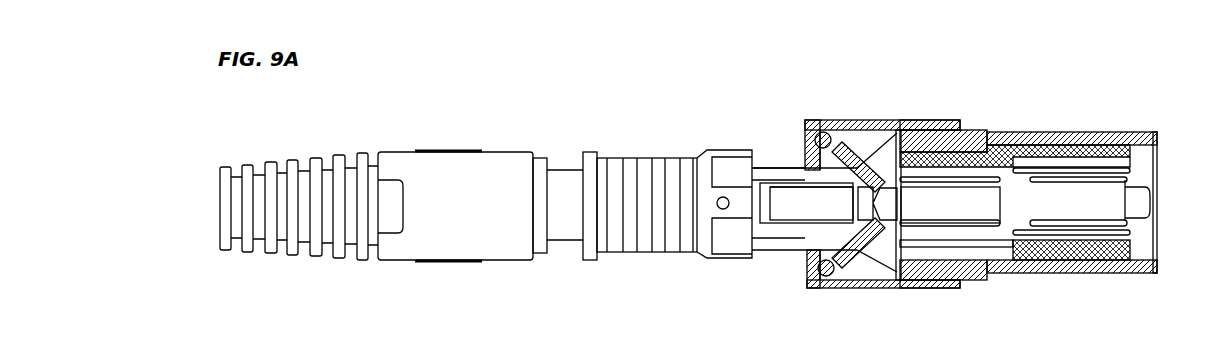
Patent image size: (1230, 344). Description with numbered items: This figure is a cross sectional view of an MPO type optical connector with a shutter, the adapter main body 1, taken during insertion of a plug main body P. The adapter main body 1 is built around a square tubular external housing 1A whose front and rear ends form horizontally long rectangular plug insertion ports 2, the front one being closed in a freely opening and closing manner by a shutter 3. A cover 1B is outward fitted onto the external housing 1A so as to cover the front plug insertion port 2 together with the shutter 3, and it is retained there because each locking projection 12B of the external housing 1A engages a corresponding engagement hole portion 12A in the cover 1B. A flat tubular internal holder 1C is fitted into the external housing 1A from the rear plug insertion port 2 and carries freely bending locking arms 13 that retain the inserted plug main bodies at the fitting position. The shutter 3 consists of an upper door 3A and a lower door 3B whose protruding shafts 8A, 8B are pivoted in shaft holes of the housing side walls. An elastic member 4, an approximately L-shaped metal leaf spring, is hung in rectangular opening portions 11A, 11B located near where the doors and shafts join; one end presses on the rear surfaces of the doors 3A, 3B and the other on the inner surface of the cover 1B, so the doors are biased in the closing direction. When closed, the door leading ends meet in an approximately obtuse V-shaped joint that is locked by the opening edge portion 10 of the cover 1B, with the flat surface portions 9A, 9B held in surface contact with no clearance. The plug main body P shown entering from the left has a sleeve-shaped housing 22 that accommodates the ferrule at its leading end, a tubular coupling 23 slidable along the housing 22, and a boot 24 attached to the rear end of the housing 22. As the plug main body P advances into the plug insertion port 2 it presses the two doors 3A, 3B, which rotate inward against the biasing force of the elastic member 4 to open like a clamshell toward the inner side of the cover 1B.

The adapter main body 1 is at (1034, 160).
The external housing 1A is at (1100, 130).
The cover 1B is at (940, 118).
The internal holder 1C is at (1043, 140).
The plug insertion port 2 is at (1157, 172).
The shutter 3 is at (715, 177).
The upper door 3A is at (800, 170).
The lower door 3B is at (857, 233).
The elastic member 4 is at (870, 128).
The protruding shafts 8A is at (817, 122).
The protruding shafts 8B is at (812, 283).
The flat surface portion 9A is at (893, 232).
The flat surface portion 9B is at (1000, 270).
The opening edge portion 10 is at (808, 257).
The opening portion 11A is at (815, 168).
The opening portion 11B is at (836, 278).
The engagement hole portion 12A is at (907, 120).
The locking projection 12B is at (917, 123).
The locking arm 13 is at (1105, 207).
The housing 22 is at (760, 232).
The coupling 23 is at (647, 235).
The boot 24 is at (455, 168).